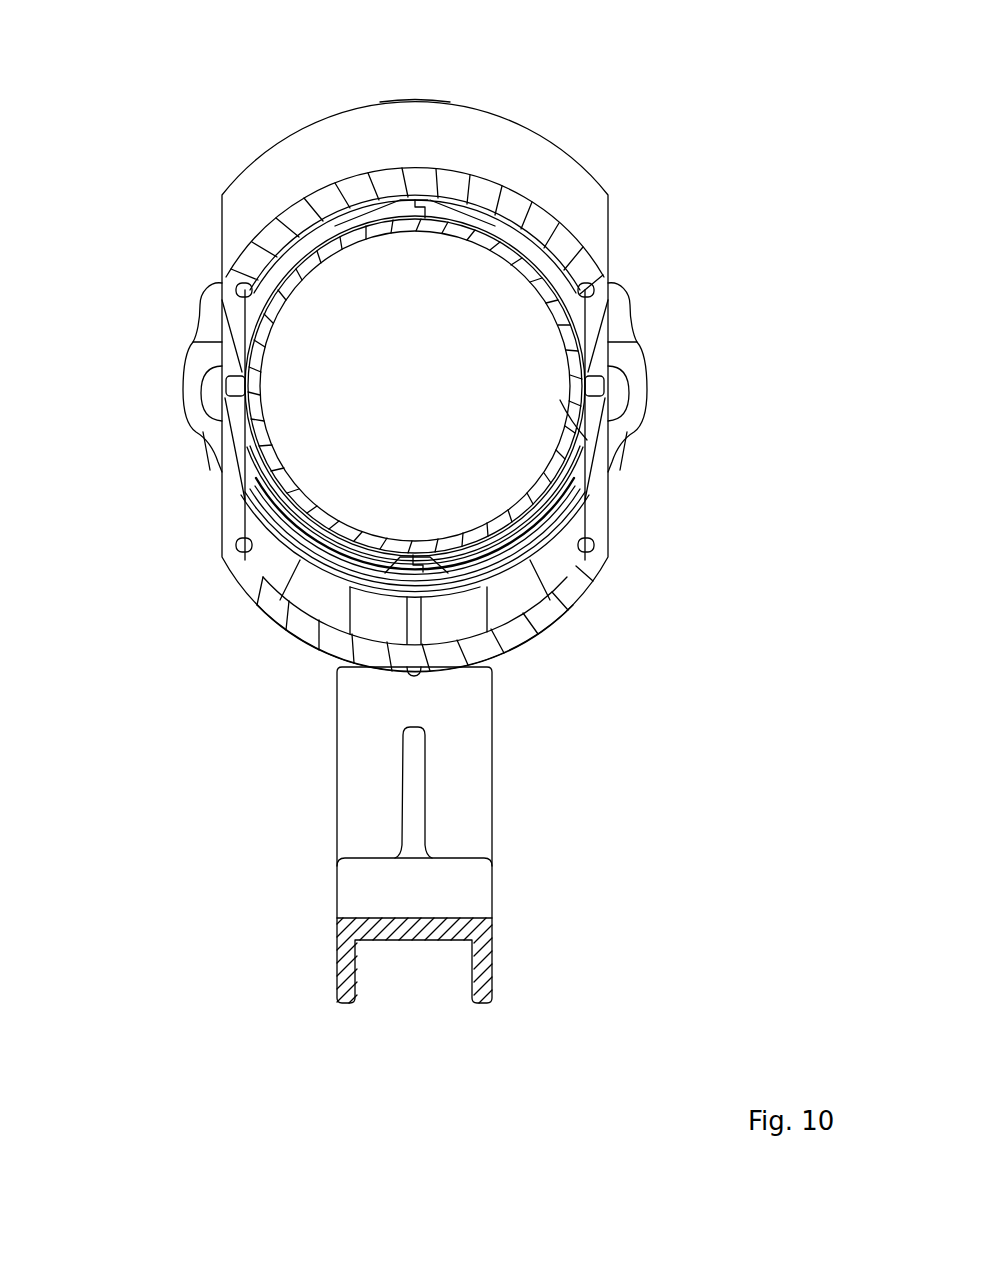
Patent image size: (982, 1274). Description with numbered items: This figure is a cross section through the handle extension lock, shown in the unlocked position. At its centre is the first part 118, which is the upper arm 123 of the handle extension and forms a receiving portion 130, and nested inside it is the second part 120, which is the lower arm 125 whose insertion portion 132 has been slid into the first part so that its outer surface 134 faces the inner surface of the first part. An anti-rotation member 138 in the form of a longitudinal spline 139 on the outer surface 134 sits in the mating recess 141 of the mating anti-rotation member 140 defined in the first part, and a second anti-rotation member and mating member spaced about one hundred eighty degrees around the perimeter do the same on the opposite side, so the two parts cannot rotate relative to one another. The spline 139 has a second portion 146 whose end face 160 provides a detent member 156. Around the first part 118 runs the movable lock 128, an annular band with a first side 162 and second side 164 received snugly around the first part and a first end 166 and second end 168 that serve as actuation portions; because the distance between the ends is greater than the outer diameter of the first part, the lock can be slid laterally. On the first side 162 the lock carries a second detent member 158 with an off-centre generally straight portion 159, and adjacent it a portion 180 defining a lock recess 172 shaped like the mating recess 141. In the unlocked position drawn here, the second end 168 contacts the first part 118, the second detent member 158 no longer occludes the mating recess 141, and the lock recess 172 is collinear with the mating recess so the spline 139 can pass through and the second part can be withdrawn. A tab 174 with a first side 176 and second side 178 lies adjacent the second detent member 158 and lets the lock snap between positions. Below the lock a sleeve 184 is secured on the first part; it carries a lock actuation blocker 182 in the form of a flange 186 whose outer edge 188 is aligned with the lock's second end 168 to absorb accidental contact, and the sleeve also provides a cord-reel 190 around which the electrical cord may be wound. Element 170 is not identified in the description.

The first part 118 is at (472, 361).
The upper arm 123 is at (592, 310).
The second part 120 is at (415, 503).
The lower arm 125 is at (270, 457).
The movable lock 128 is at (500, 648).
The receiving portion 130 is at (326, 222).
The insertion portion 132 is at (308, 508).
The outer surface 134 is at (490, 535).
The anti-rotation member 138 is at (516, 400).
The spline 139 is at (516, 400).
The mating anti-rotation member 140 is at (673, 434).
The mating recess 141 is at (604, 398).
The second portion of spline 146 is at (516, 400).
The detent member 156 is at (588, 388).
The second detent member 158 is at (600, 447).
The generally straight portion 159 is at (243, 433).
The end face 160 is at (519, 390).
The first side 162 is at (598, 573).
The second side 164 is at (222, 545).
The first end 166 is at (535, 250).
The second end 168 is at (535, 635).
The ring 170 is at (480, 198).
The lock recess 172 is at (560, 400).
The tab 174 is at (583, 585).
The first side of tab 176 is at (545, 479).
The second side of tab 178 is at (570, 560).
The portion defining lock recess 180 is at (618, 392).
The lock actuation blocker 182 is at (415, 344).
The sleeve 184 is at (322, 620).
The flange 186 is at (475, 160).
The outer edge 188 is at (438, 100).
The cord-reel 190 is at (480, 813).